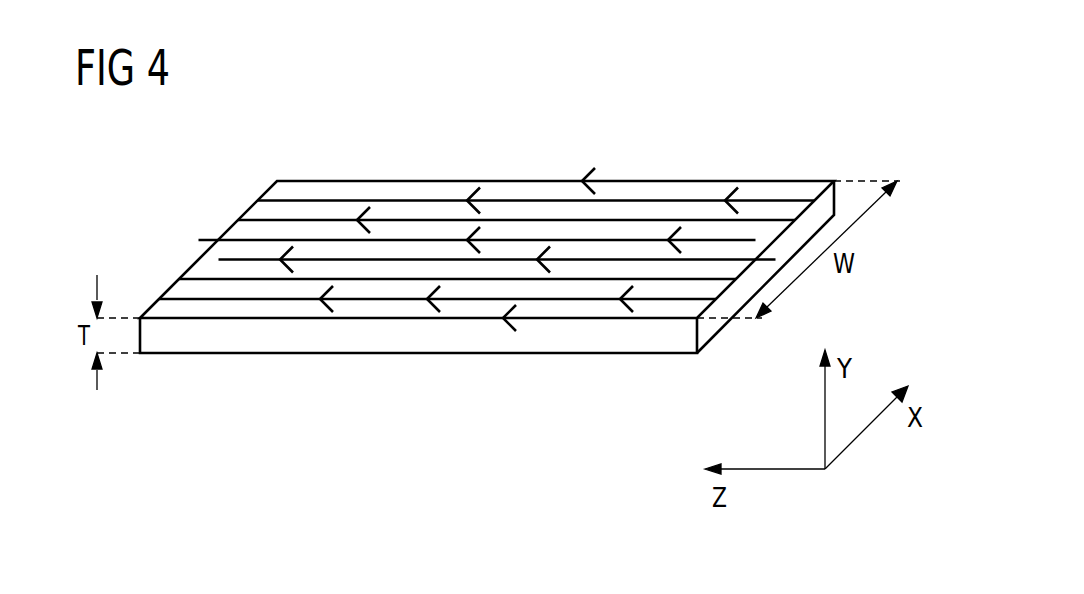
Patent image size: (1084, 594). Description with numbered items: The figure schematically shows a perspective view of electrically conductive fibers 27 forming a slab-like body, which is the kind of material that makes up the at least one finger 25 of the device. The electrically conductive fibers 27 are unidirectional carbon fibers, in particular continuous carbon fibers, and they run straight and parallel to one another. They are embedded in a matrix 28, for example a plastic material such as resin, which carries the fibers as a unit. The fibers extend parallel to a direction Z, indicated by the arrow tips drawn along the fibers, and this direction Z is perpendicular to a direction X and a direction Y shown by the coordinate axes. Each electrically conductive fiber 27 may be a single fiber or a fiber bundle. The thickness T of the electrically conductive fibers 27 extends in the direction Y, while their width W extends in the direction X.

The finger 25 is at (589, 143).
The electrically conductive fibers 27 is at (415, 200).
The matrix 28 is at (242, 230).